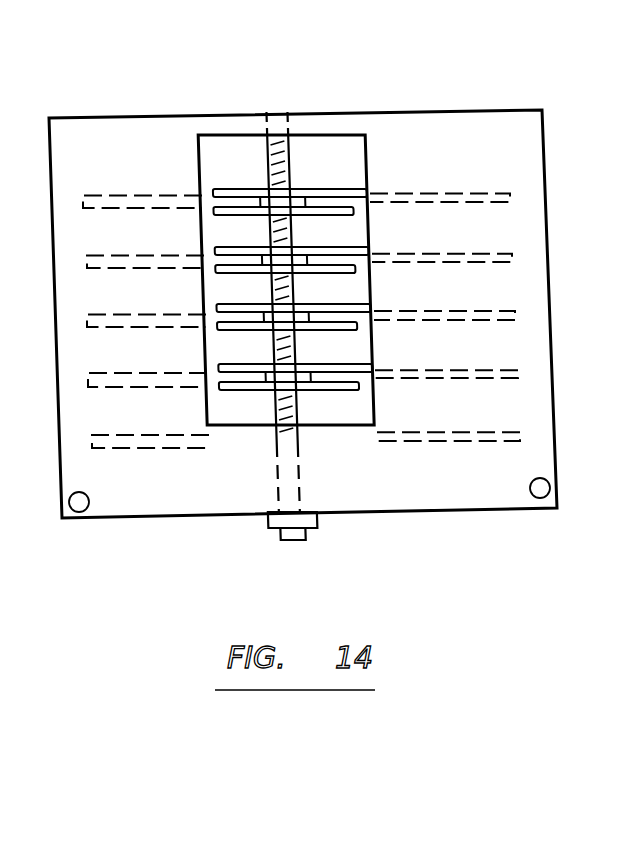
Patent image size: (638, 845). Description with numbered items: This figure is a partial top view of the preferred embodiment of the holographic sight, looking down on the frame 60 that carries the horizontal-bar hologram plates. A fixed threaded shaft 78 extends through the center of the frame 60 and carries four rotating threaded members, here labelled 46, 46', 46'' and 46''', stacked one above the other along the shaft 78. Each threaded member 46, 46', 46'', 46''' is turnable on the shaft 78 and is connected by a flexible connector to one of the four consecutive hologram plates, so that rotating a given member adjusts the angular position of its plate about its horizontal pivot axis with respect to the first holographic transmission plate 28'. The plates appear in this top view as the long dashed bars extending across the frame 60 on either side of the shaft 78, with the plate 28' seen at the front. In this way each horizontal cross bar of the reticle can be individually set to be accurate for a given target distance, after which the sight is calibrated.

The frame 60 is at (68, 133).
The threaded shaft 78 is at (264, 168).
The clamp assembly 46 is at (308, 141).
The clamp assembly 46' is at (327, 243).
The clamp assembly 46'' is at (332, 299).
The clamp assembly 46''' is at (337, 359).
The support slat 28' is at (301, 347).